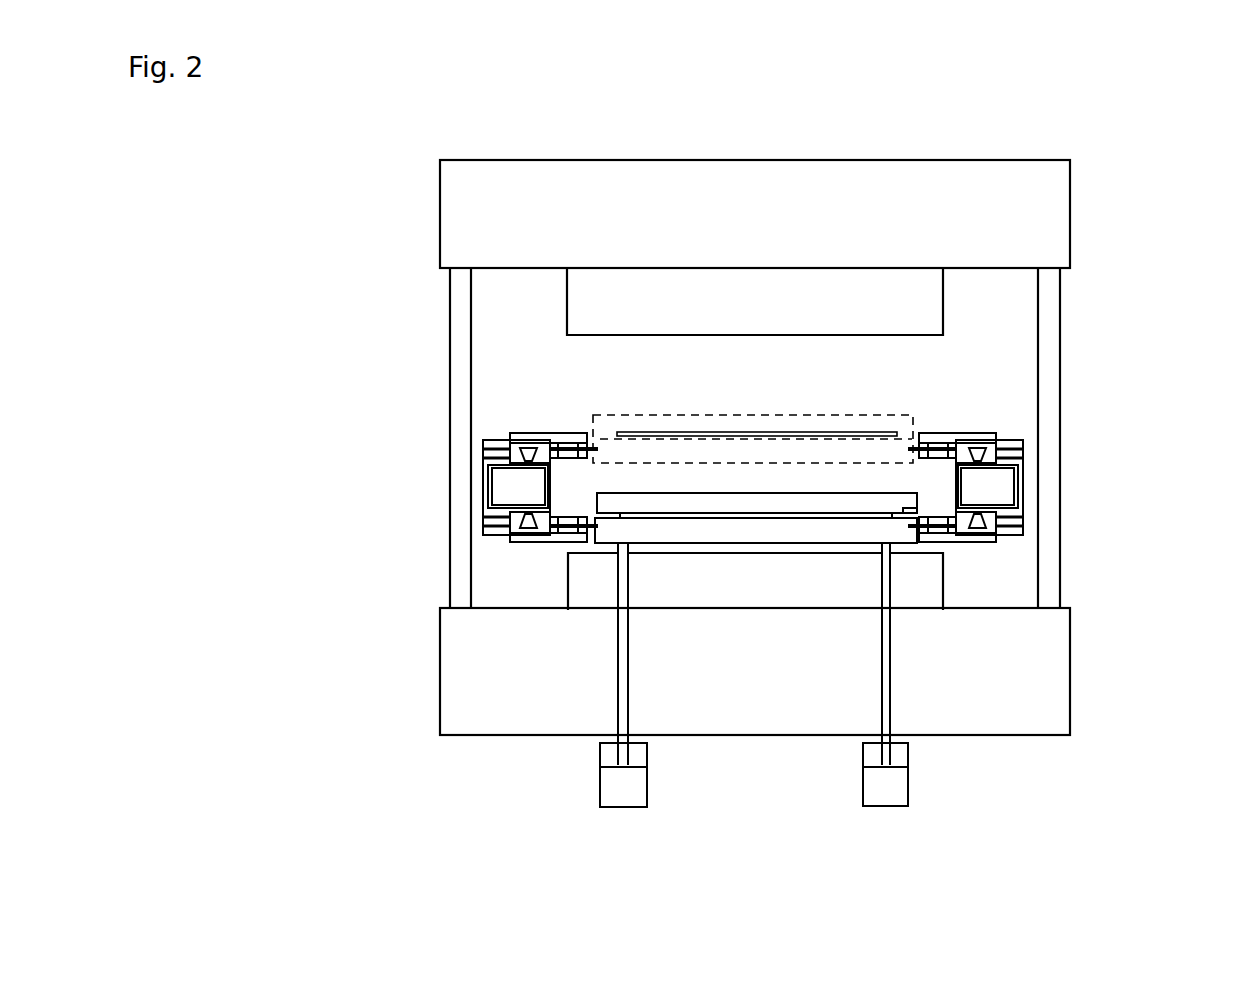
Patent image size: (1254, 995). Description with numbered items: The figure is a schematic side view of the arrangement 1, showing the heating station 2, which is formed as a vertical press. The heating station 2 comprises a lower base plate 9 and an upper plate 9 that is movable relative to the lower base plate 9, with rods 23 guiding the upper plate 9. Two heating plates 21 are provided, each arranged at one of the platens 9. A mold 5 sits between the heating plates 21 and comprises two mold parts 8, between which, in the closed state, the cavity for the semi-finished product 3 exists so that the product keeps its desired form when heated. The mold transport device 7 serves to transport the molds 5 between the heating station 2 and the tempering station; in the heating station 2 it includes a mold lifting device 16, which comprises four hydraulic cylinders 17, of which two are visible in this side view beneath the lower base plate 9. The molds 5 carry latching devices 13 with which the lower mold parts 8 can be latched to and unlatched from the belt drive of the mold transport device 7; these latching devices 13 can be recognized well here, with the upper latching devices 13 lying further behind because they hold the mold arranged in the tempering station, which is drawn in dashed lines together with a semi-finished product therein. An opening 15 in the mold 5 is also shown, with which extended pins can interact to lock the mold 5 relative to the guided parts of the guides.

The arrangement 1 is at (268, 186).
The heating station 2 is at (1110, 168).
The workpiece 3 is at (715, 516).
The mold 5 is at (590, 553).
The mold transport device 7 is at (494, 419).
The mold part 8 is at (783, 505).
The platen 9 is at (773, 224).
The latching device 13 is at (553, 428).
The opening 15 is at (914, 509).
The mold lifting device 16 is at (553, 798).
The hydraulic cylinder 17 is at (847, 798).
The heating plate 21 is at (745, 316).
The rod 23 is at (462, 318).